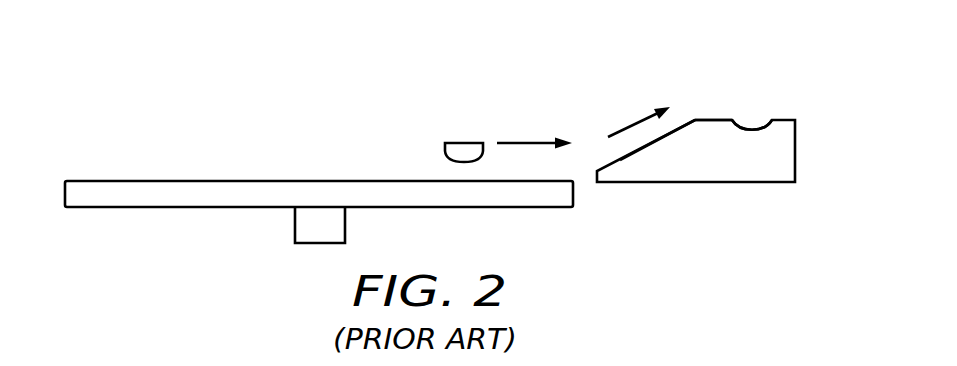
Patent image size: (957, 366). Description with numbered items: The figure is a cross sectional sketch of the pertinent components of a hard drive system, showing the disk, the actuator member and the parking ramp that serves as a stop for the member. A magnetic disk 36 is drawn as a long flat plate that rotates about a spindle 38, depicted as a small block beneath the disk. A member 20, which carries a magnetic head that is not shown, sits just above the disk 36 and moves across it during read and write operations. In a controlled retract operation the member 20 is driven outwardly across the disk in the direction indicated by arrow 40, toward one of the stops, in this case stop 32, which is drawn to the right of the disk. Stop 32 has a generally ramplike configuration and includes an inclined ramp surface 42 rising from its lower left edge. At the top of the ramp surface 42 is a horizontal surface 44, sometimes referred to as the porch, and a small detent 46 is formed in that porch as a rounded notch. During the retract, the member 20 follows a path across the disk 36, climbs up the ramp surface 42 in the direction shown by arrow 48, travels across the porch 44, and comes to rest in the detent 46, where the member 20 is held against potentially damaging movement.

The member 20 is at (463, 142).
The stop 32 is at (695, 185).
The magnetic disk 36 is at (185, 208).
The spindle 38 is at (347, 223).
The arrow 40 is at (533, 142).
The ramp surface 42 is at (648, 145).
The horizontal surface 44 is at (713, 118).
The detent 46 is at (752, 130).
The arrow 48 is at (638, 120).